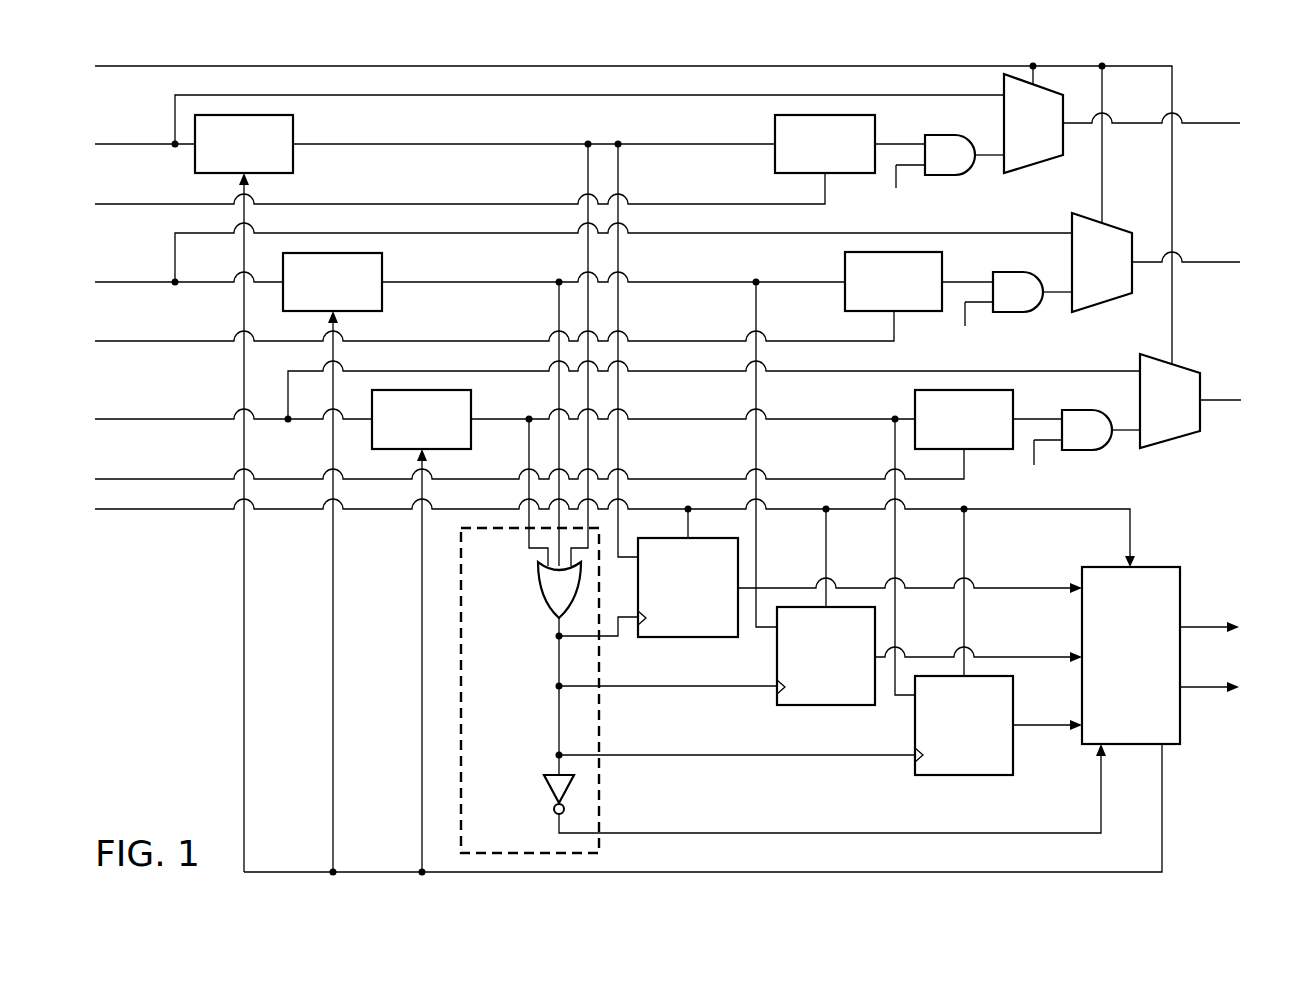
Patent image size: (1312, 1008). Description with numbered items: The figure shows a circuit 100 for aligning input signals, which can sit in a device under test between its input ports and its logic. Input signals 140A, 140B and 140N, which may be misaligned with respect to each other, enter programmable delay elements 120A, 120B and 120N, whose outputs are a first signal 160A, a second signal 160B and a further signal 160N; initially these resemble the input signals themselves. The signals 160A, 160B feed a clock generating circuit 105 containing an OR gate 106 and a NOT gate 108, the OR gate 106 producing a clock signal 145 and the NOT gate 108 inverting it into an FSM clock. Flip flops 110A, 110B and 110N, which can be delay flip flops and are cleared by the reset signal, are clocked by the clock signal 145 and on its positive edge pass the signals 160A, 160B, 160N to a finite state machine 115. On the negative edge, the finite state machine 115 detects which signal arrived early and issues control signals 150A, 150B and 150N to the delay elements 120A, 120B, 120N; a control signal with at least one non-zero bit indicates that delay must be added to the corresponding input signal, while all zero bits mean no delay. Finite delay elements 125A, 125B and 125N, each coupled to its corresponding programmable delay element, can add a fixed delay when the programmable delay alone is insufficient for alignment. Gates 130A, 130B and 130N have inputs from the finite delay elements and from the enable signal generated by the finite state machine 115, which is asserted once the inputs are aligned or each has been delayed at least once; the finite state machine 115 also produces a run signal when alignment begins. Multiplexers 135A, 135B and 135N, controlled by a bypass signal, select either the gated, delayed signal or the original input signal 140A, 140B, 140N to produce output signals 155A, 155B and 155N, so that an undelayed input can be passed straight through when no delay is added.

The circuit 100 is at (667, 465).
The clock generating circuit 105 is at (783, 690).
The OR gate 106 is at (540, 585).
The NOT gate 108 is at (554, 790).
The first flip flop 110A is at (662, 585).
The second flip flop 110B is at (800, 655).
The flip flop 110N is at (938, 724).
The finite state machine 115 is at (1113, 705).
The first programmable delay element 120A is at (218, 156).
The second programmable delay element 120B is at (306, 294).
The programmable delay element 120N is at (395, 431).
The finite delay element 125A is at (799, 156).
The finite delay element 125B is at (867, 294).
The finite delay element 125N is at (938, 431).
The first gate 130A is at (944, 176).
The second gate 130B is at (1012, 313).
The gate 130N is at (1080, 451).
The first multiplexer 135A is at (1046, 163).
The second multiplexer 135B is at (1110, 302).
The multiplexer 135N is at (1184, 440).
The signal 140A is at (137, 143).
The signal 140B is at (137, 281).
The signal 140N is at (137, 418).
The clock signal 145 is at (556, 621).
The first control signal 150A is at (242, 692).
The second control signal 150B is at (331, 692).
The control signal 150N is at (421, 692).
The output signal 155A is at (1206, 122).
The output signal 155B is at (1206, 261).
The output signal 155N is at (1220, 399).
The first signal 160A is at (688, 143).
The second signal 160B is at (688, 281).
The signal 160N is at (688, 418).